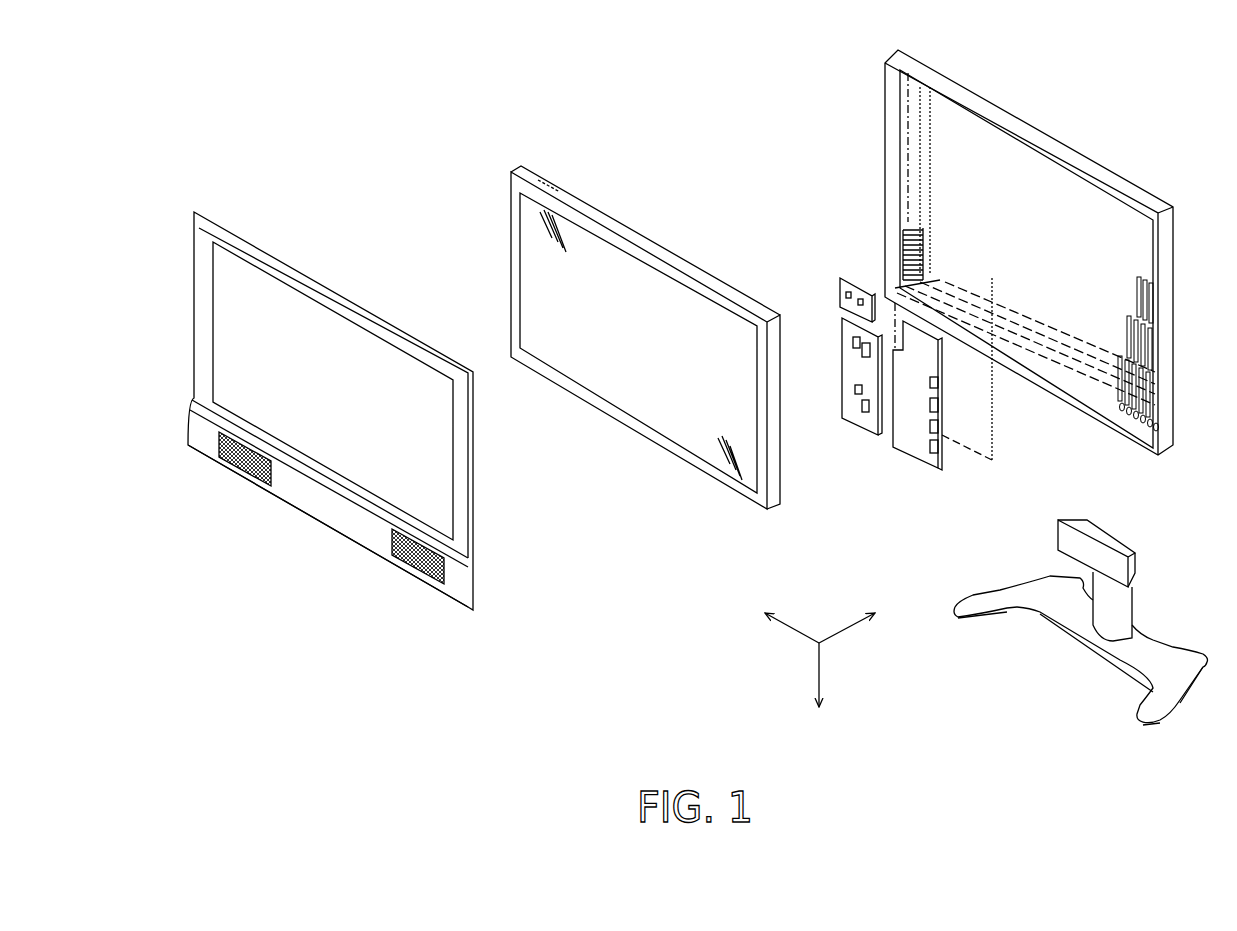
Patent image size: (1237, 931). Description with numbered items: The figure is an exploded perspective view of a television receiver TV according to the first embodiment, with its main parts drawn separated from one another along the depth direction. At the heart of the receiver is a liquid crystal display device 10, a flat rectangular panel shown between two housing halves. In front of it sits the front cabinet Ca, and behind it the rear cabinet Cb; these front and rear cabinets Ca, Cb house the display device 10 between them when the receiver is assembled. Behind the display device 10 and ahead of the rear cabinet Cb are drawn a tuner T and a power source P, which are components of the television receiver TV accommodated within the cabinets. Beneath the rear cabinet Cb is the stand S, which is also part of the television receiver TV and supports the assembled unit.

The television receiver TV is at (667, 118).
The front cabinet Ca is at (320, 279).
The rear cabinet Cb is at (1018, 122).
The liquid crystal display device 10 is at (602, 209).
The tuner T is at (857, 422).
The power source P is at (910, 457).
The stand S is at (1005, 610).